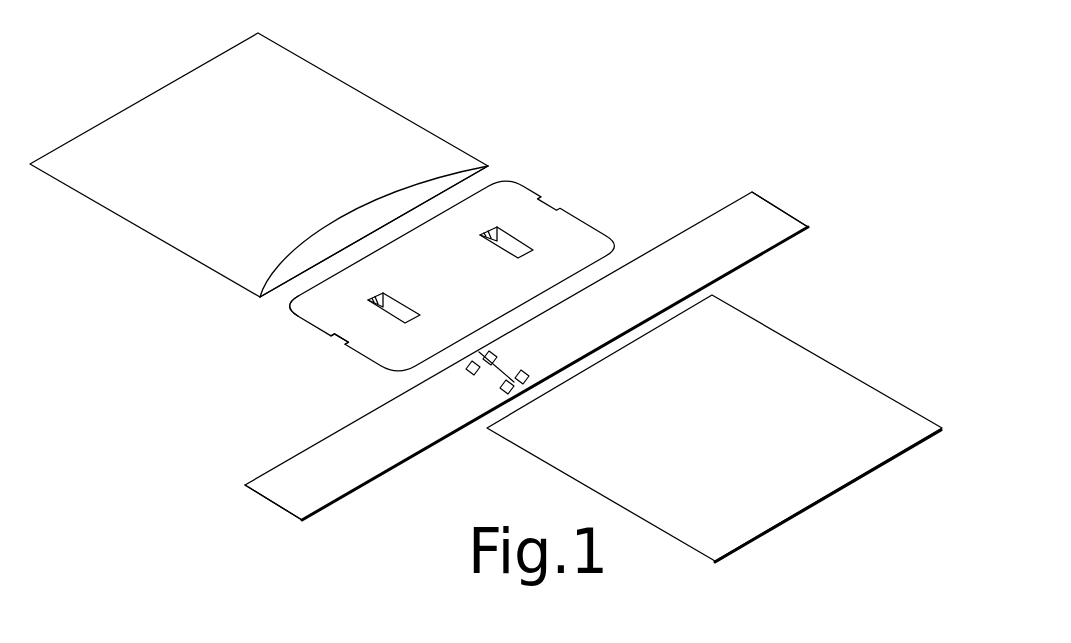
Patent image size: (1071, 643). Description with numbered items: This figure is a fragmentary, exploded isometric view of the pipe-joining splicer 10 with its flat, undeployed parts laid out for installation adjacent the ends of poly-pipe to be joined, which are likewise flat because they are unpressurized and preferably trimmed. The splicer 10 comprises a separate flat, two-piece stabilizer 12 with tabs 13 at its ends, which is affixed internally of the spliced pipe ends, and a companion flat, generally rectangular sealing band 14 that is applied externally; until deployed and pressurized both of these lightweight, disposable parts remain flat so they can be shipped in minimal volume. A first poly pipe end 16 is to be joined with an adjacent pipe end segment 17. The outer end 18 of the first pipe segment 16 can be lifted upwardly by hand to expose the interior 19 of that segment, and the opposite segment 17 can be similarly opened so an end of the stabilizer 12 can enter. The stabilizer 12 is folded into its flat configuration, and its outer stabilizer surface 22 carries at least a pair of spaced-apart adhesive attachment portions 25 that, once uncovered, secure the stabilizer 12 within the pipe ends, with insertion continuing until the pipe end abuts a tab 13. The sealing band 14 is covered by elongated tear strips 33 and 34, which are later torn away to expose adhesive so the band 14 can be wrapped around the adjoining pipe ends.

The pipe-joining splicer 10 is at (230, 468).
The stabilizer 12 is at (545, 197).
The tab 13 is at (327, 343).
The sealing band 14 is at (772, 252).
The first poly pipe end 16 is at (333, 102).
The adjacent pipe end segment 17 is at (858, 400).
The outer end 18 is at (328, 222).
The interior 19 is at (373, 213).
The outer stabilizer surface 22 is at (312, 310).
The adhesive attachment portion 25 is at (533, 243).
The tear strip 33 is at (298, 495).
The tear strip 34 is at (757, 205).